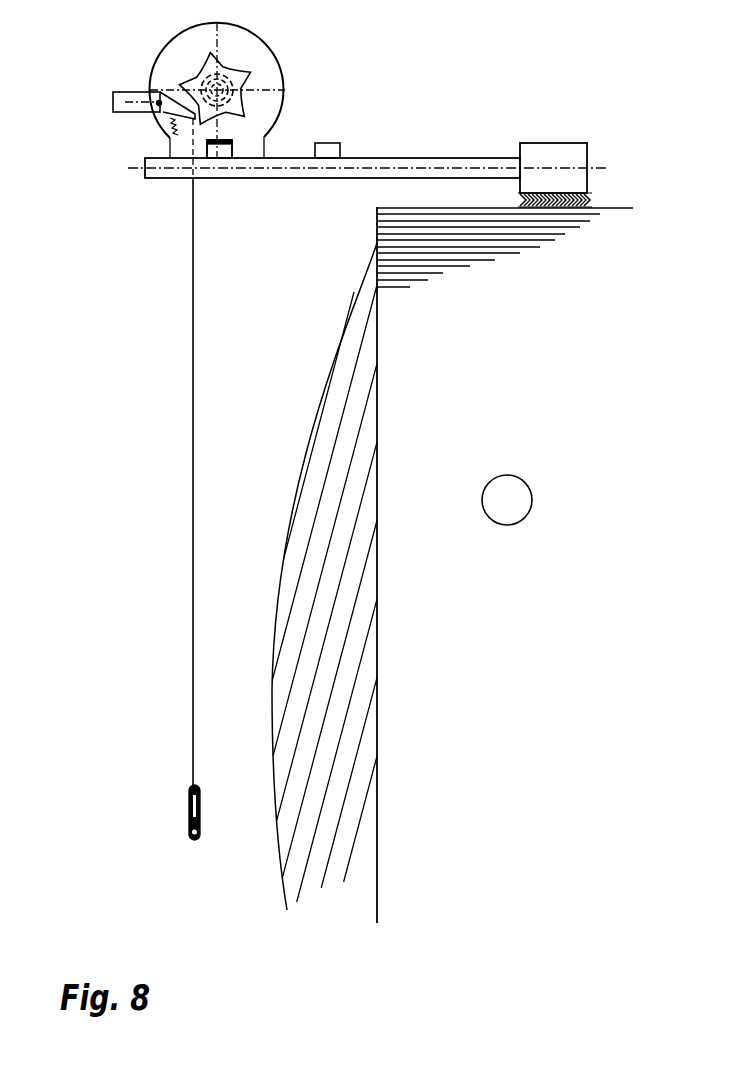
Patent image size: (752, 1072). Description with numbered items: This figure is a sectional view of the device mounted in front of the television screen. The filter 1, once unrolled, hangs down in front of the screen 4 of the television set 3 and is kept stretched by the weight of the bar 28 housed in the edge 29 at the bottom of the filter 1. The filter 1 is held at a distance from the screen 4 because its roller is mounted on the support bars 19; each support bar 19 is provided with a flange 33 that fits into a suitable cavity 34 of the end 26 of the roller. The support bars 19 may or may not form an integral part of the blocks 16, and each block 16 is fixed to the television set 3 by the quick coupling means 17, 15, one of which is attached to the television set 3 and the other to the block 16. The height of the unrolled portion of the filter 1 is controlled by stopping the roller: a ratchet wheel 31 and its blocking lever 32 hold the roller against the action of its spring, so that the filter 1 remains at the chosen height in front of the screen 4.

The filter 1 is at (193, 503).
The television set 3 is at (507, 500).
The screen 4 is at (327, 422).
The quick coupling means 15 is at (585, 210).
The block 16 is at (533, 158).
The quick coupling means 17 is at (590, 198).
The support bar 19 is at (382, 168).
The end 26 is at (263, 65).
The bar 28 is at (190, 828).
The edge 29 is at (190, 803).
The ratchet wheel 31 is at (236, 90).
The blocking lever 32 is at (122, 102).
The flange 33 is at (328, 148).
The cavity 34 is at (232, 147).